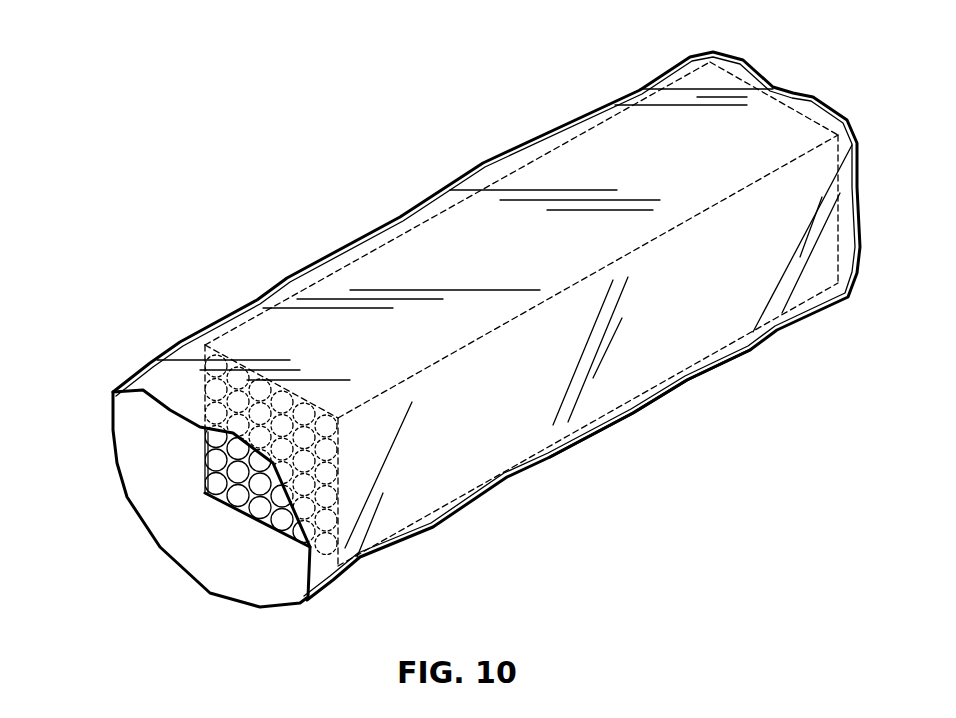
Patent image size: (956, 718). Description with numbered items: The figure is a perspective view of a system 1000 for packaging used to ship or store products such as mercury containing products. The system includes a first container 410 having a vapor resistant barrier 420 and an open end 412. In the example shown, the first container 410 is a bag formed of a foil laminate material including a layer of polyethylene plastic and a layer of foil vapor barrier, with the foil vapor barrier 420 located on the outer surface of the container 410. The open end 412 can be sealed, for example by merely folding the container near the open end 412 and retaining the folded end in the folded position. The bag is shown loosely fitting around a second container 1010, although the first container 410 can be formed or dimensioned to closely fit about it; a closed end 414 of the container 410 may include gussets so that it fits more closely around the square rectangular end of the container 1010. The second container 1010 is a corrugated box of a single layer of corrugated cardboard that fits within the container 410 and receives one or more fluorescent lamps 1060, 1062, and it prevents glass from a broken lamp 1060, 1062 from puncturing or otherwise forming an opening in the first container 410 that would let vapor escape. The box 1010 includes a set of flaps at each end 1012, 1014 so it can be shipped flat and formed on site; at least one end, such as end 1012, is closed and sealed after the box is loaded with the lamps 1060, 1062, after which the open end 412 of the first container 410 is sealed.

The system for packaging 1000 is at (312, 88).
The end of the box 1014 is at (732, 76).
The closed end 414 is at (818, 97).
The second container 1010 is at (683, 352).
The vapor resistant barrier 420 is at (630, 417).
The first container 410 is at (438, 527).
The open end 412 is at (160, 527).
The end of the box 1012 is at (205, 471).
The fluorescent lamp 1062 is at (213, 463).
The fluorescent lamp 1060 is at (277, 530).